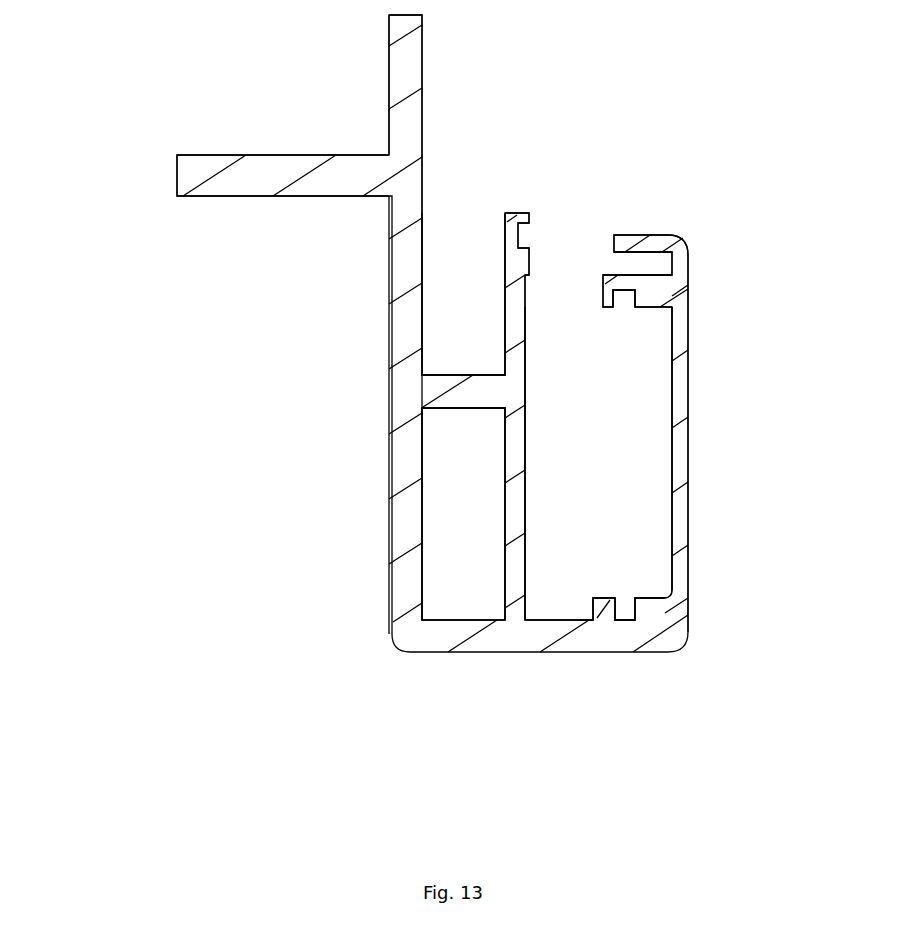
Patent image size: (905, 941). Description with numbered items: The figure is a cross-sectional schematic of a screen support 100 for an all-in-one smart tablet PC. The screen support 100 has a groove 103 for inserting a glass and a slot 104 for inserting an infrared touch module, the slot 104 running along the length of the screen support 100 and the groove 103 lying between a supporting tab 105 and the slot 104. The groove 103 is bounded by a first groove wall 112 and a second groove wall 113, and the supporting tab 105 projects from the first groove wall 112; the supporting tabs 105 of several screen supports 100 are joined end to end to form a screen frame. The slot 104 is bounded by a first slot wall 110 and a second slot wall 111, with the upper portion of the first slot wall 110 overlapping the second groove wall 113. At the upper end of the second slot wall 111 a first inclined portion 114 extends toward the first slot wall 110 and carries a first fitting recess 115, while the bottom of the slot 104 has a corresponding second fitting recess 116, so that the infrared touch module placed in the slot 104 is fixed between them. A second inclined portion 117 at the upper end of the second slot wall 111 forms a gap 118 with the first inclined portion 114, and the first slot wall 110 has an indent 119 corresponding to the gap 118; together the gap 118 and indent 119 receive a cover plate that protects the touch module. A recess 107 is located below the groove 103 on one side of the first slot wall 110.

The screen support 100 is at (190, 485).
The groove 103 is at (457, 250).
The slot 104 is at (598, 443).
The supporting tab 105 is at (251, 175).
The recess 107 is at (459, 528).
The first slot wall 110 is at (515, 505).
The second slot wall 111 is at (680, 503).
The first groove wall 112 is at (405, 268).
The second groove wall 113 is at (515, 263).
The first inclined portion 114 is at (630, 282).
The first fitting recess 115 is at (622, 302).
The second fitting recess 116 is at (625, 608).
The second inclined portion 117 is at (672, 243).
The gap 118 is at (627, 262).
The indent 119 is at (525, 237).